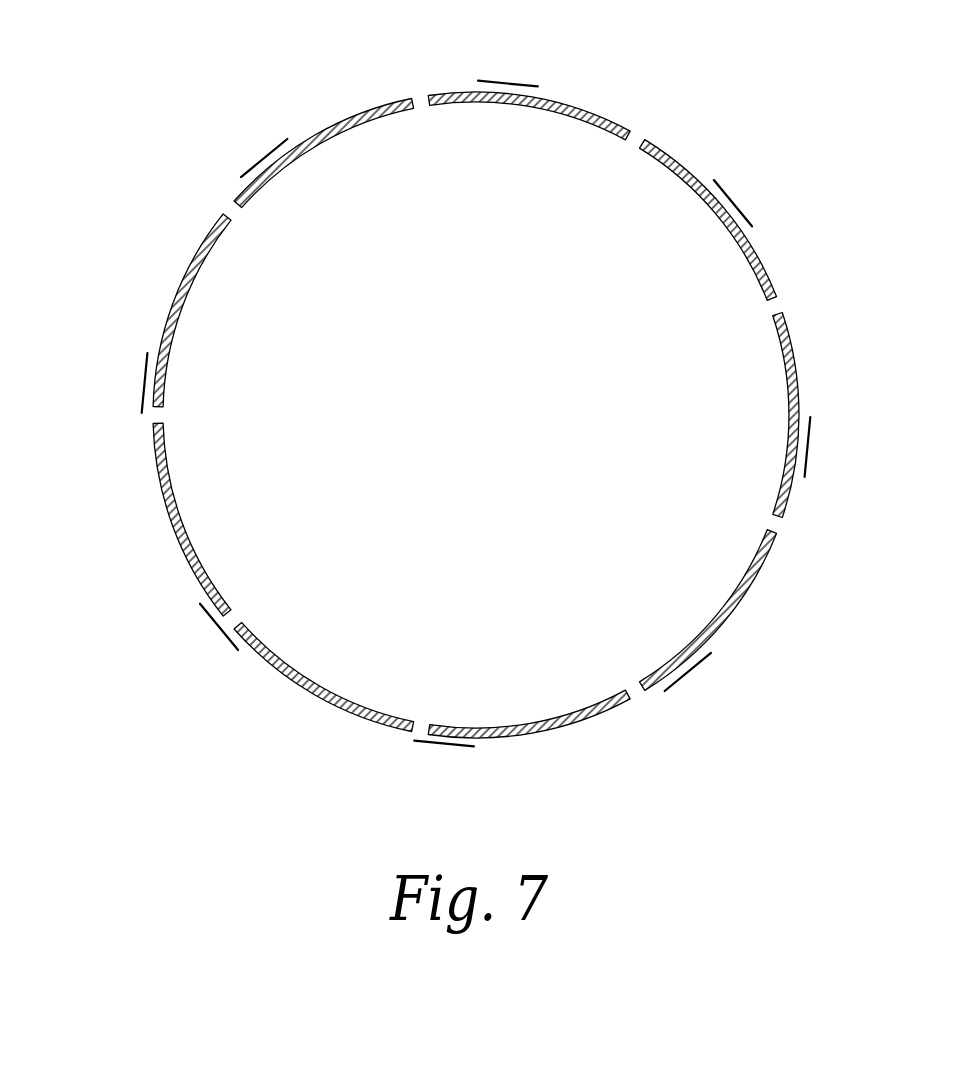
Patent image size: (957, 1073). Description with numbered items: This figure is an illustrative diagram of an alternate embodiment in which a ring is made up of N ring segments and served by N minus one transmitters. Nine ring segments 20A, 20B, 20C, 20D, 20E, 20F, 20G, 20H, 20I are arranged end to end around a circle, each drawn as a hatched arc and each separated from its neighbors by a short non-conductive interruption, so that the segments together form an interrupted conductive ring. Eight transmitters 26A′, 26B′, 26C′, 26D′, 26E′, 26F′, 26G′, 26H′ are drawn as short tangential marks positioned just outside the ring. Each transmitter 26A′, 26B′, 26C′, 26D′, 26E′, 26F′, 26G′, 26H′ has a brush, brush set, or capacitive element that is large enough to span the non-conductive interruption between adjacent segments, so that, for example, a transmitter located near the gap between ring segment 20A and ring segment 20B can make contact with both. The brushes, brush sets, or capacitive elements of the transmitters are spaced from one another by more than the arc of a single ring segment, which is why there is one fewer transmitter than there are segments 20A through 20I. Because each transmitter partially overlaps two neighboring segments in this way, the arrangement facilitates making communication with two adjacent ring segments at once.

The ring segment 20A is at (563, 112).
The ring segment 20B is at (305, 152).
The ring segment 20C is at (180, 298).
The ring segment 20D is at (178, 520).
The ring segment 20E is at (282, 660).
The ring segment 20F is at (517, 722).
The ring segment 20G is at (722, 612).
The ring segment 20H is at (787, 358).
The ring segment 20I is at (732, 235).
The transmitter 26A′ is at (505, 80).
The transmitter 26B′ is at (265, 156).
The transmitter 26C′ is at (142, 380).
The transmitter 26D′ is at (222, 628).
The transmitter 26E′ is at (445, 745).
The transmitter 26F′ is at (687, 668).
The transmitter 26G′ is at (810, 448).
The transmitter 26H′ is at (735, 202).